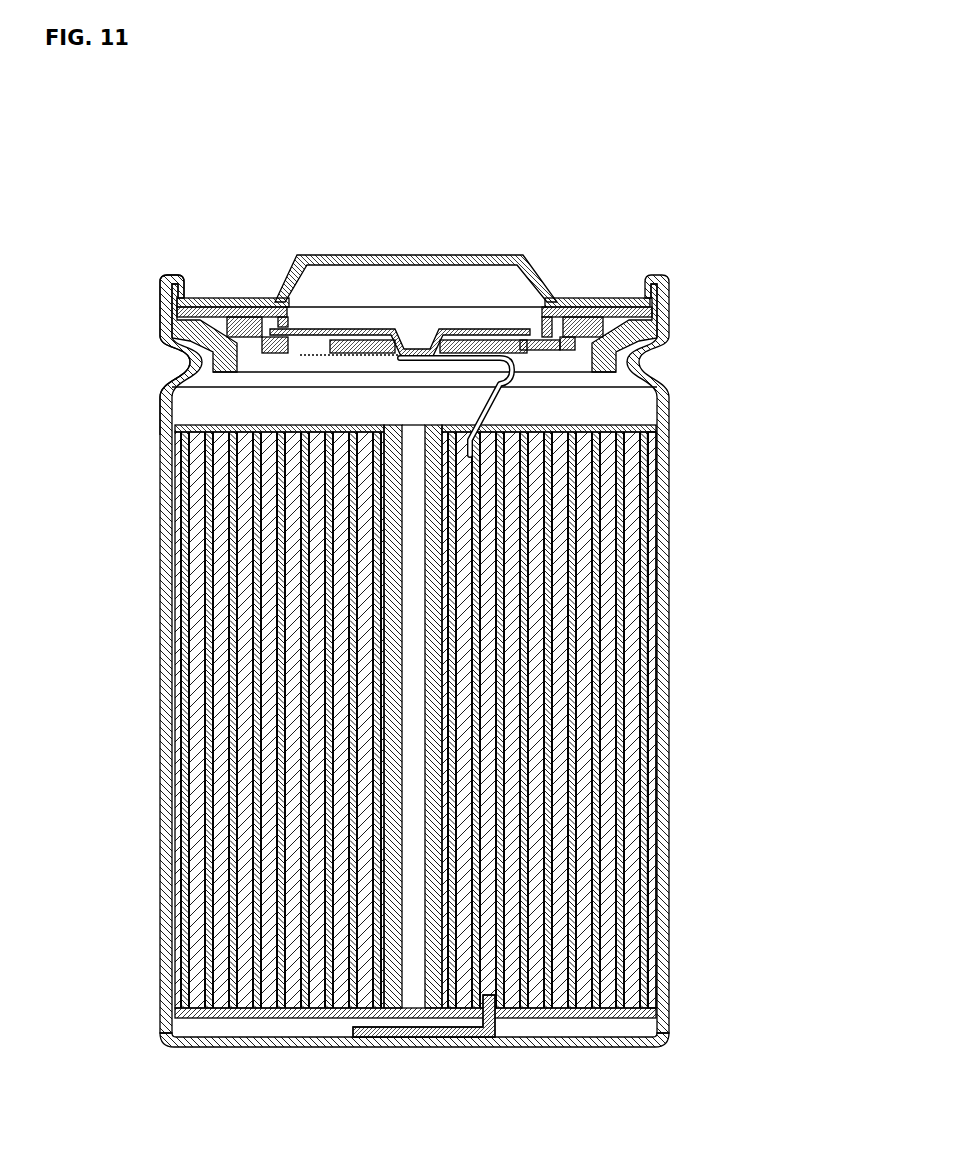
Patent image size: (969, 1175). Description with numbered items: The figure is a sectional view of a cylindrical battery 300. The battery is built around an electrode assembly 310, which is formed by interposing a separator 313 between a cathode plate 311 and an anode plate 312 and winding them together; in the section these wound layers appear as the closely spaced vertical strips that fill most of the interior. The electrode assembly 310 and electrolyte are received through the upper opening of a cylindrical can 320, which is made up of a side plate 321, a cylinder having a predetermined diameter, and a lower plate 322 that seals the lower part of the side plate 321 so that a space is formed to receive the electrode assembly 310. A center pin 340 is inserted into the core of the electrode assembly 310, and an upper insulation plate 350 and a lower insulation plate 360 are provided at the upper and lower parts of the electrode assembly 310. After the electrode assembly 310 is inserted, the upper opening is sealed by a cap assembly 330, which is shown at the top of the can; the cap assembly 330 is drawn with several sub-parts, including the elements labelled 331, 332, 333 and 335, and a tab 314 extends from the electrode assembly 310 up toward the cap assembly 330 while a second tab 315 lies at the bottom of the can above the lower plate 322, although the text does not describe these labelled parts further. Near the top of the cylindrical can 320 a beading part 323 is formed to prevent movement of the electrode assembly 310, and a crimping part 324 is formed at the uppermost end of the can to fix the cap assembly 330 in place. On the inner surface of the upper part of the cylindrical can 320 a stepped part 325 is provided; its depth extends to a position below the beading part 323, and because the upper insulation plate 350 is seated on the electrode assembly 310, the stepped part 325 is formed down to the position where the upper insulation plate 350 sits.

The cylindrical battery 300 is at (134, 166).
The electrode assembly 310 is at (755, 478).
The cathode plate 311 is at (650, 477).
The anode plate 312 is at (640, 563).
The separator 313 is at (648, 517).
The first electrode tab 314 is at (482, 387).
The second electrode tab 315 is at (466, 1037).
The cylindrical can 320 is at (684, 680).
The side plate 321 is at (665, 818).
The lower plate 322 is at (533, 1042).
The beading part 323 is at (185, 357).
The crimping part 324 is at (168, 280).
The stepped part 325 is at (165, 413).
The cap assembly 330 is at (558, 183).
The cap-up 331 is at (462, 256).
The safety vent 332 is at (528, 330).
The cap plate 333 is at (572, 295).
The sub-plate 335 is at (347, 358).
The center pin 340 is at (430, 908).
The upper insulation plate 350 is at (660, 428).
The lower insulation plate 360 is at (310, 1012).